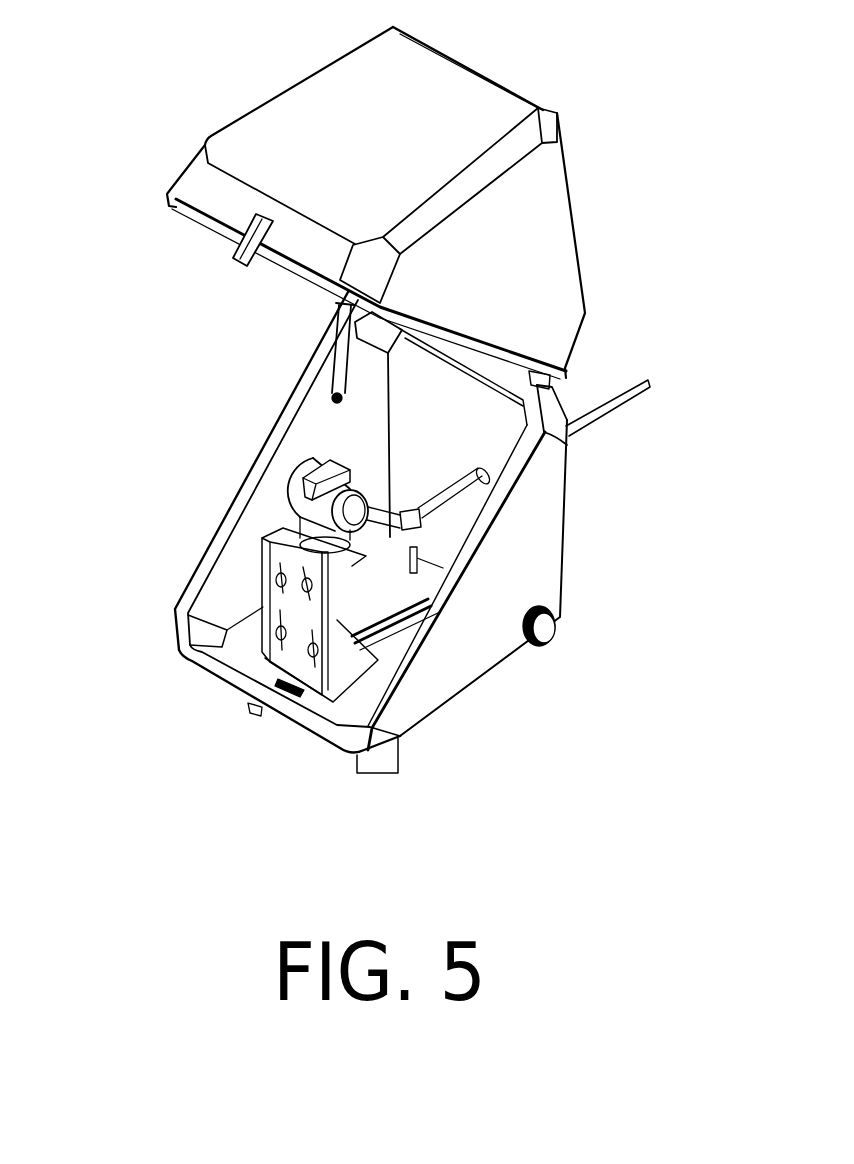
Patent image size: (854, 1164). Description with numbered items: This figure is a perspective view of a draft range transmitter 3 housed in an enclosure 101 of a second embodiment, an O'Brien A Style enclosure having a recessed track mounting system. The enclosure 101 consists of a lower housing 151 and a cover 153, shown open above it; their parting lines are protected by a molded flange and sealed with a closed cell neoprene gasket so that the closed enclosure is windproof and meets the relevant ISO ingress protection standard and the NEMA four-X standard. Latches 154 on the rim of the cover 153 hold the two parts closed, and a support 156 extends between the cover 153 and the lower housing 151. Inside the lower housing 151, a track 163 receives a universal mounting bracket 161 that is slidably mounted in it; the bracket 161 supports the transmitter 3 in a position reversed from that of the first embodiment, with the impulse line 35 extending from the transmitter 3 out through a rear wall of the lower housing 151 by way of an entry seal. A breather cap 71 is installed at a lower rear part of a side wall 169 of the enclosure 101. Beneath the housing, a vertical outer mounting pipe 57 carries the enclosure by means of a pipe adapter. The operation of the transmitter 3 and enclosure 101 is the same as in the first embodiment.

The enclosure 101 is at (208, 396).
The cover 153 is at (552, 245).
The latches 154 is at (236, 260).
The support 156 is at (348, 344).
The lower housing 151 is at (235, 546).
The side wall 169 is at (520, 573).
The breather cap 71 is at (549, 627).
The impulse line 35 is at (610, 413).
The outer mounting pipe 57 is at (365, 765).
The draft range transmitter 3 is at (300, 482).
The universal mounting bracket 161 is at (278, 598).
The track 163 is at (410, 628).